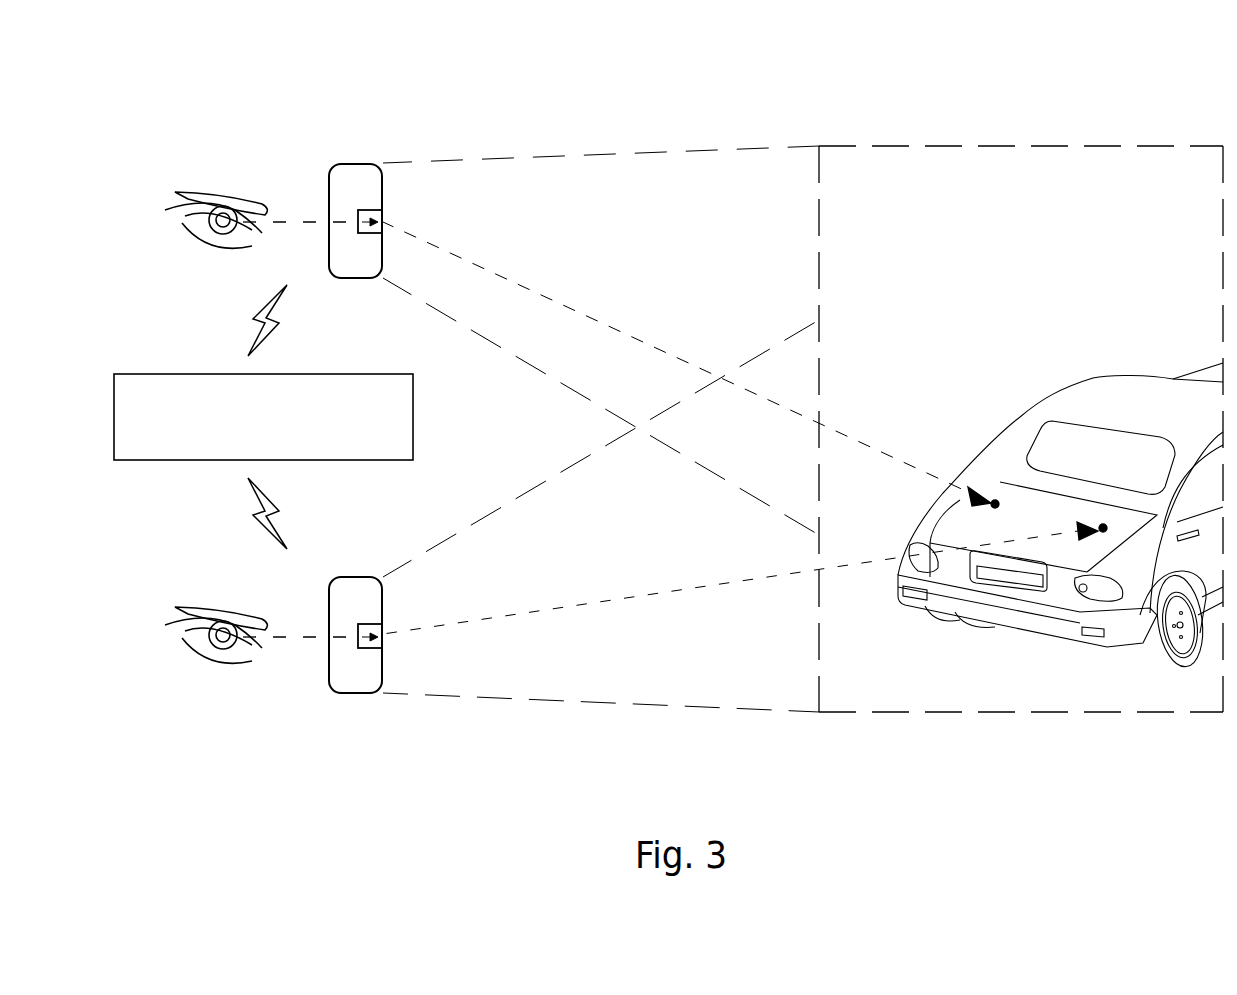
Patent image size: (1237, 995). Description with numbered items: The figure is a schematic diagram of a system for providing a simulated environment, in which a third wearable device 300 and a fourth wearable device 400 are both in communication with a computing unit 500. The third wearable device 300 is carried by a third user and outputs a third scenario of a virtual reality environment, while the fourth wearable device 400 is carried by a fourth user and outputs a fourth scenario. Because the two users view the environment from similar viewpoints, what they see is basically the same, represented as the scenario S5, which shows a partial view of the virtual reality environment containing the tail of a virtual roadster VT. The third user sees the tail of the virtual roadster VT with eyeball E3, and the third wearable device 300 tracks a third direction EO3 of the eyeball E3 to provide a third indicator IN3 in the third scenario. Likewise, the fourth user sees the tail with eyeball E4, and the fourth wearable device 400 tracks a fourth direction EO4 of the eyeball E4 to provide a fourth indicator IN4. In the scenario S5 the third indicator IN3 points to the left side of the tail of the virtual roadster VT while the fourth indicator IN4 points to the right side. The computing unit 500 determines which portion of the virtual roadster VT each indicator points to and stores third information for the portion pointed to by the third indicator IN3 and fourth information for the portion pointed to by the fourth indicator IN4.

The eyeball E3 is at (222, 218).
The third direction EO3 is at (310, 222).
The third wearable device 300 is at (357, 164).
The computing unit 500 is at (263, 417).
The eyeball E4 is at (223, 640).
The fourth direction EO4 is at (310, 637).
The fourth wearable device 400 is at (355, 694).
The scenario S5 is at (1045, 146).
The virtual roadster VT is at (1093, 397).
The third indicator IN3 is at (995, 504).
The fourth indicator IN4 is at (1103, 528).